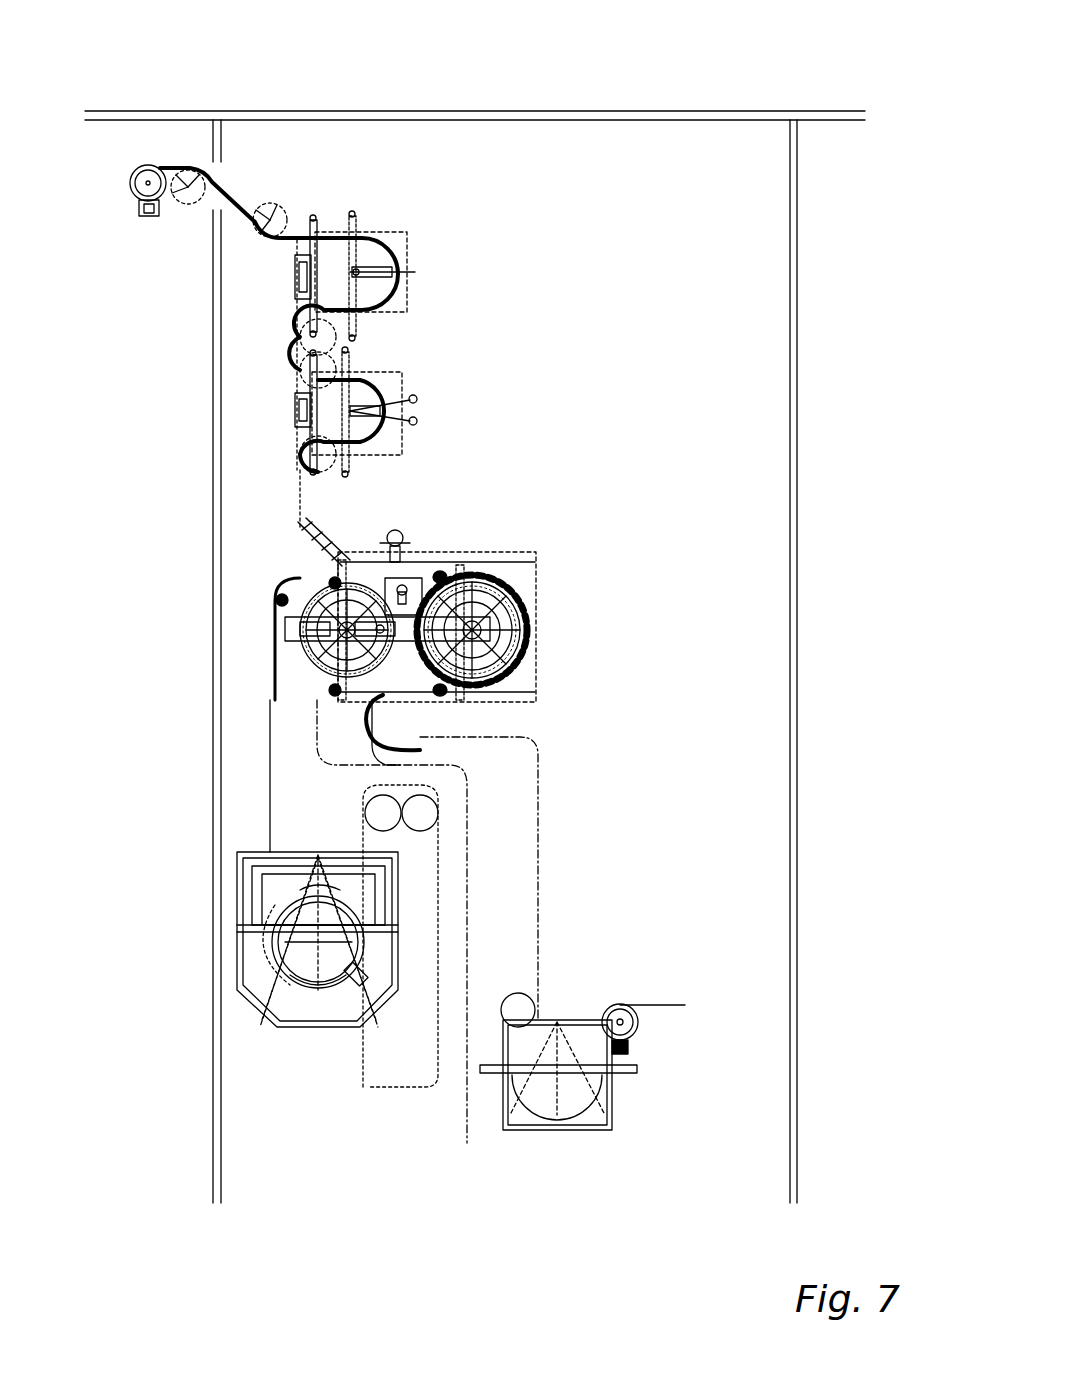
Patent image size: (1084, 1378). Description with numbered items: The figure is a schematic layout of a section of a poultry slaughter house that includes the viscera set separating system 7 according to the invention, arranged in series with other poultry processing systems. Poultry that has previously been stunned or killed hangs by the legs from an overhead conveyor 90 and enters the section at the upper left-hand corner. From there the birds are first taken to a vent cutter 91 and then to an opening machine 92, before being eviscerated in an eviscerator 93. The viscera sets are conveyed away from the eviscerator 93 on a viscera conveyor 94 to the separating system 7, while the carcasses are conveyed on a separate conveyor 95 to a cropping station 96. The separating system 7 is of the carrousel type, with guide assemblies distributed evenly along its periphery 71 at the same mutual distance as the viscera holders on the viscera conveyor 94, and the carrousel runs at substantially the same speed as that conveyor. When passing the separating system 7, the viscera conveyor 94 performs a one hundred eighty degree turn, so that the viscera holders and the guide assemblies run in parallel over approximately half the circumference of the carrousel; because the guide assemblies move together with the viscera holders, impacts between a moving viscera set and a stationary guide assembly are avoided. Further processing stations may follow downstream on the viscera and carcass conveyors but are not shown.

The overhead conveyor 90 is at (237, 192).
The vent cutter 91 is at (422, 238).
The opening machine 92 is at (432, 408).
The eviscerator 93 is at (565, 655).
The viscera conveyor 94 is at (268, 785).
The carcass conveyor 95 is at (543, 870).
The viscera set separating system 7 is at (232, 945).
The periphery 71 is at (285, 975).
The cropping station 96 is at (655, 1080).